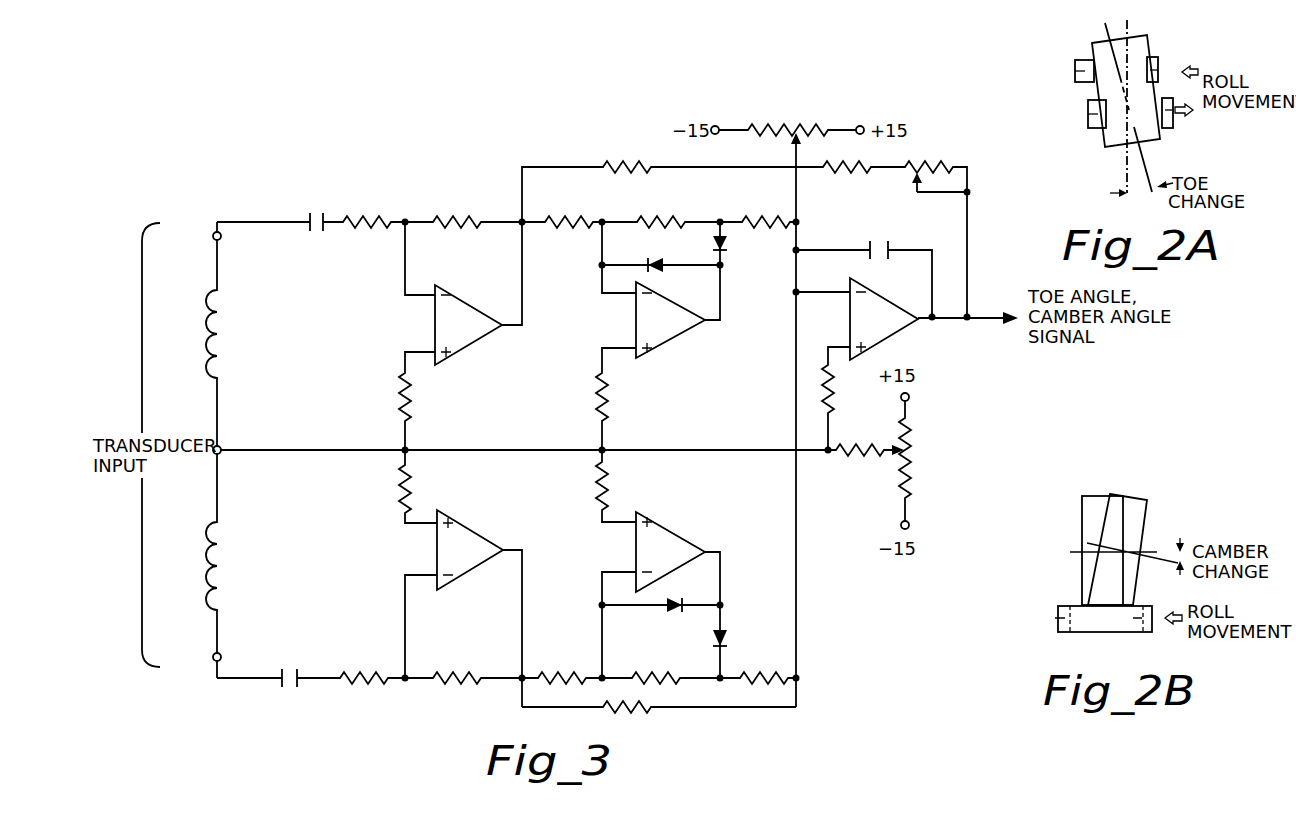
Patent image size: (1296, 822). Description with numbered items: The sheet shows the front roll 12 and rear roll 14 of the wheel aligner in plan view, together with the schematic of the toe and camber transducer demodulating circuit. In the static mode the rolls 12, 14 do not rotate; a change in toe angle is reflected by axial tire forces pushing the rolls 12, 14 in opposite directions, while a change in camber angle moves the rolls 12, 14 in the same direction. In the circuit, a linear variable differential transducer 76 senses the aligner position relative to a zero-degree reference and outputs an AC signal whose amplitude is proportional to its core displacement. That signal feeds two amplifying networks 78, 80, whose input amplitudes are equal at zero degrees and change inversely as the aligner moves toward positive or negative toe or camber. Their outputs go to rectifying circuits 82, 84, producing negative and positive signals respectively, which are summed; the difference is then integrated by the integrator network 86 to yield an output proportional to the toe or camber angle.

In FIG. 2A, the front roll 12 is at (1170, 132).
In FIG. 2B, the front roll 12 is at (1078, 632).
In FIG. 2A, the rear roll 14 is at (1160, 63).
In FIG. 3, the linear variable differential transducer 76 is at (202, 314).
In FIG. 3, the amplifying network 78 is at (390, 280).
In FIG. 3, the amplifying network 80 is at (390, 551).
In FIG. 3, the rectifying circuit 82 is at (591, 270).
In FIG. 3, the rectifying circuit 84 is at (609, 548).
In FIG. 3, the integrator network 86 is at (810, 321).